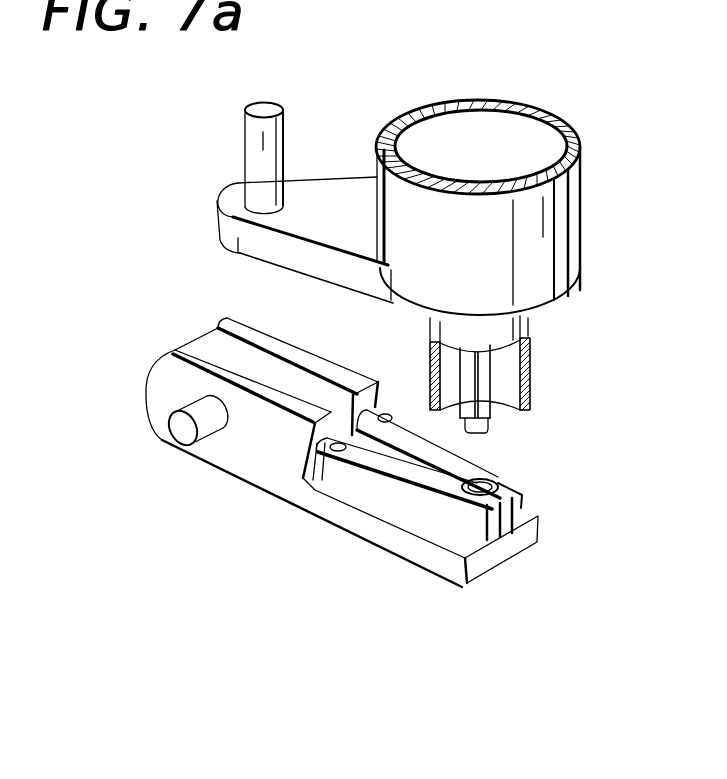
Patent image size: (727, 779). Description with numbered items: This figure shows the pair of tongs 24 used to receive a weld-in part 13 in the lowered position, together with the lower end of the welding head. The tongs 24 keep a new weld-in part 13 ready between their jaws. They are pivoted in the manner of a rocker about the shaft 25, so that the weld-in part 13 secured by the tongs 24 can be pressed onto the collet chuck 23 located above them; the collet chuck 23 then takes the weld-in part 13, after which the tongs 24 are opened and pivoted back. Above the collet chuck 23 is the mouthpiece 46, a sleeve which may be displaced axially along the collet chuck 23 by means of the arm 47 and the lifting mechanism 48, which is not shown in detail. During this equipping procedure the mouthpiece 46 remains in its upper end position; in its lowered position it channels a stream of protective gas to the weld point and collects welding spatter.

The weld-in part 13 is at (483, 487).
The collet chuck 23 is at (485, 378).
The pair of tongs 24 is at (503, 508).
The shaft 25 is at (184, 434).
The mouthpiece 46 is at (558, 197).
The arm 47 is at (311, 203).
The lifting mechanism 48 is at (257, 150).